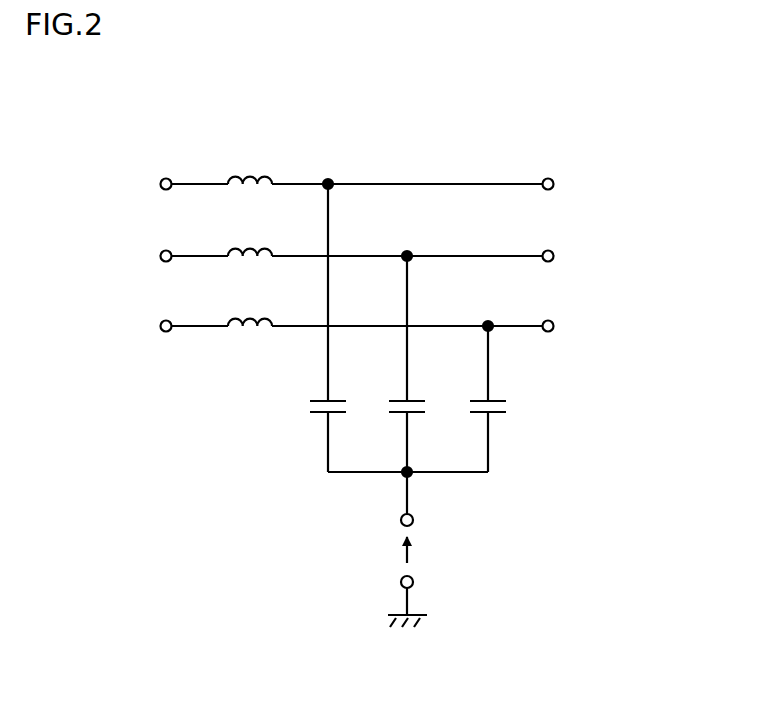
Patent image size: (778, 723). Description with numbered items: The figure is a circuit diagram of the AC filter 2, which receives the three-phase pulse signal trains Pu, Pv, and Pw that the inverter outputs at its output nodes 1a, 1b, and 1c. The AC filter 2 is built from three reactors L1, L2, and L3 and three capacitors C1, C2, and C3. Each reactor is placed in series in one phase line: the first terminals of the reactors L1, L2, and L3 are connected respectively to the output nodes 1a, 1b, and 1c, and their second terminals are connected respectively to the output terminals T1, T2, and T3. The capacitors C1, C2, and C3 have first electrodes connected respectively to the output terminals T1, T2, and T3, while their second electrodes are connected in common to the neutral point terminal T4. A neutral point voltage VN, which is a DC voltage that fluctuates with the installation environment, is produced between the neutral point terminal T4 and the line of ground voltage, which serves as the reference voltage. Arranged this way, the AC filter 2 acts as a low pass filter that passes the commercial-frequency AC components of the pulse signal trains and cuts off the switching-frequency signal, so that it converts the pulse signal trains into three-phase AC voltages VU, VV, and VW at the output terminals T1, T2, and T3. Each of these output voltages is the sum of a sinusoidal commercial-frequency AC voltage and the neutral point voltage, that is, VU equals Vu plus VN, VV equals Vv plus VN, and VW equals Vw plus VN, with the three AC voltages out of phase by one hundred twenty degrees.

The AC filter 2 is at (158, 99).
The output node 1a is at (167, 178).
The output node 1b is at (167, 250).
The output node 1c is at (167, 320).
The reactor L1 is at (263, 174).
The reactor L2 is at (263, 246).
The reactor L3 is at (263, 316).
The output terminal T1 is at (544, 180).
The output terminal T2 is at (544, 252).
The output terminal T3 is at (544, 322).
The neutral point terminal T4 is at (414, 520).
The capacitor C1 is at (322, 398).
The capacitor C2 is at (402, 398).
The capacitor C3 is at (482, 398).